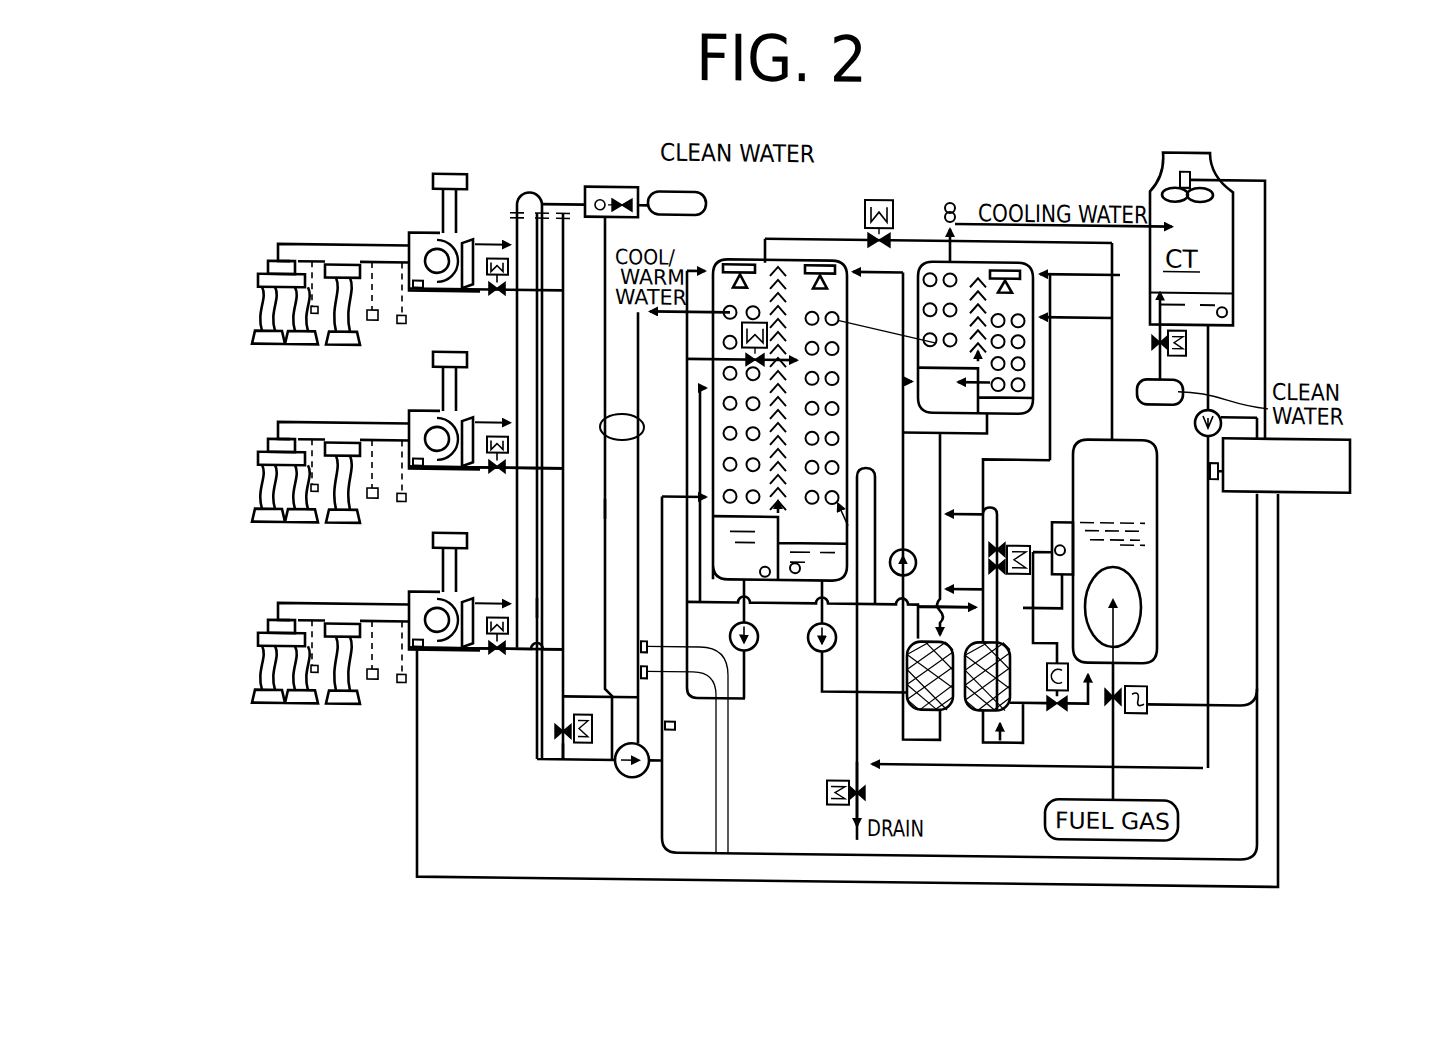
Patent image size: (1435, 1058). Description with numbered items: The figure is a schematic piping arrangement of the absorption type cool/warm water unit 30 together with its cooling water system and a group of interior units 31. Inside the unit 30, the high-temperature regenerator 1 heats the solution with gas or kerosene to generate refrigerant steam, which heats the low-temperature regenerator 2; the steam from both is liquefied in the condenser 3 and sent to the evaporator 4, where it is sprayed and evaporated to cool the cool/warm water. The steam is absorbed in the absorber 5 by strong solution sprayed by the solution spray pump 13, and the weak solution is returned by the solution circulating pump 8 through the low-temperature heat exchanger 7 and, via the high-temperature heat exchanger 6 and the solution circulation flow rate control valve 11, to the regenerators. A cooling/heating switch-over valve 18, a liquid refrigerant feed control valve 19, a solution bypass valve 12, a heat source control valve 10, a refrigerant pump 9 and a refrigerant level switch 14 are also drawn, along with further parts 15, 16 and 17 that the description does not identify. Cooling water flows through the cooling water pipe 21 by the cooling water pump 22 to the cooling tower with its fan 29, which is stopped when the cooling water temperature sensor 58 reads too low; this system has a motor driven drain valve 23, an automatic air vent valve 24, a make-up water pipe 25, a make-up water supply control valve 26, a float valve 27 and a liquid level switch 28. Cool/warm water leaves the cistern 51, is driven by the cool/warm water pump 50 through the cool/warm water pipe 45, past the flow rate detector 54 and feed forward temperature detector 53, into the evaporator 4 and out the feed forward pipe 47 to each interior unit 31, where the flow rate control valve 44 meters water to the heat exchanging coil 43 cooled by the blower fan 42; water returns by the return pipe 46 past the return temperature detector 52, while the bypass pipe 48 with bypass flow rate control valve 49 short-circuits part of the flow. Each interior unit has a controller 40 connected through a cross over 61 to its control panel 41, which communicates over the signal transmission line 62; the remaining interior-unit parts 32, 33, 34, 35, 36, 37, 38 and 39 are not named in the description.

The high-temperature regenerator 1 is at (1137, 466).
The low-temperature regenerator 2 is at (1045, 297).
The condenser 3 is at (918, 244).
The evaporator 4 is at (733, 261).
The absorber 5 is at (847, 296).
The high-temperature heat exchanger 6 is at (980, 712).
The low-temperature heat exchanger 7 is at (940, 710).
The solution circulating pump 8 is at (808, 647).
The refrigerant pump 9 is at (758, 639).
The heat source control valve 10 is at (1146, 683).
The solution circulation flow rate control valve 11 is at (1060, 704).
The solution bypass valve 12 is at (1016, 533).
The solution spray pump 13 is at (907, 553).
The refrigerant level switch 14 is at (770, 574).
The level sensor 15 is at (794, 564).
The heat exchanger 16 is at (1060, 520).
The level tube 17 is at (862, 464).
The cooling/heating switch-over valve 18 is at (879, 198).
The liquid refrigerant feed control valve 19 is at (766, 263).
The cooling water pipe 21 is at (968, 766).
The cooling water pump 22 is at (1193, 419).
The motor driven drain valve 23 is at (868, 792).
The automatic air vent valve 24 is at (947, 203).
The make-up water pipe 25 is at (1155, 366).
The motor driven make-up water supply control valve 26 is at (1186, 339).
The float valve 27 is at (1168, 295).
The liquid level switch 28 is at (1227, 306).
The fan 29 is at (1165, 188).
The absorption type cool/warm water unit 30 is at (796, 695).
The interior unit 31 is at (448, 324).
The air outlet 32 is at (268, 352).
The diffuser 33 is at (335, 339).
The branch duct 34 is at (350, 442).
The damper 35 is at (305, 272).
The duct 36 is at (347, 249).
The diffuser plate 37 is at (257, 466).
The air duct 38 is at (456, 211).
The air inlet 39 is at (447, 177).
The controller 40 is at (375, 324).
The interior unit operation control panel 41 is at (418, 292).
The blower fan 42 is at (412, 244).
The heat exchanging coil 43 is at (573, 612).
The cool/warm water flow rate control valve 44 is at (498, 299).
The cool/warm water pipe 45 is at (648, 424).
The return pipe 46 is at (563, 347).
The feed forward pipe 47 is at (563, 507).
The cool/warm water bypass pipe 48 is at (558, 755).
The bypass flow rate control valve 49 is at (583, 758).
The cool/warm water pump 50 is at (640, 778).
The cistern 51 is at (605, 187).
The return cool/warm water temperature detector 52 is at (675, 730).
The feed forward cool/warm water temperature detector 53 is at (645, 680).
The cool/warm water flow rate detector 54 is at (651, 632).
The cooling water temperature sensor 58 is at (1215, 474).
The cross over 61 is at (398, 314).
The signal transmission line 62 is at (417, 882).